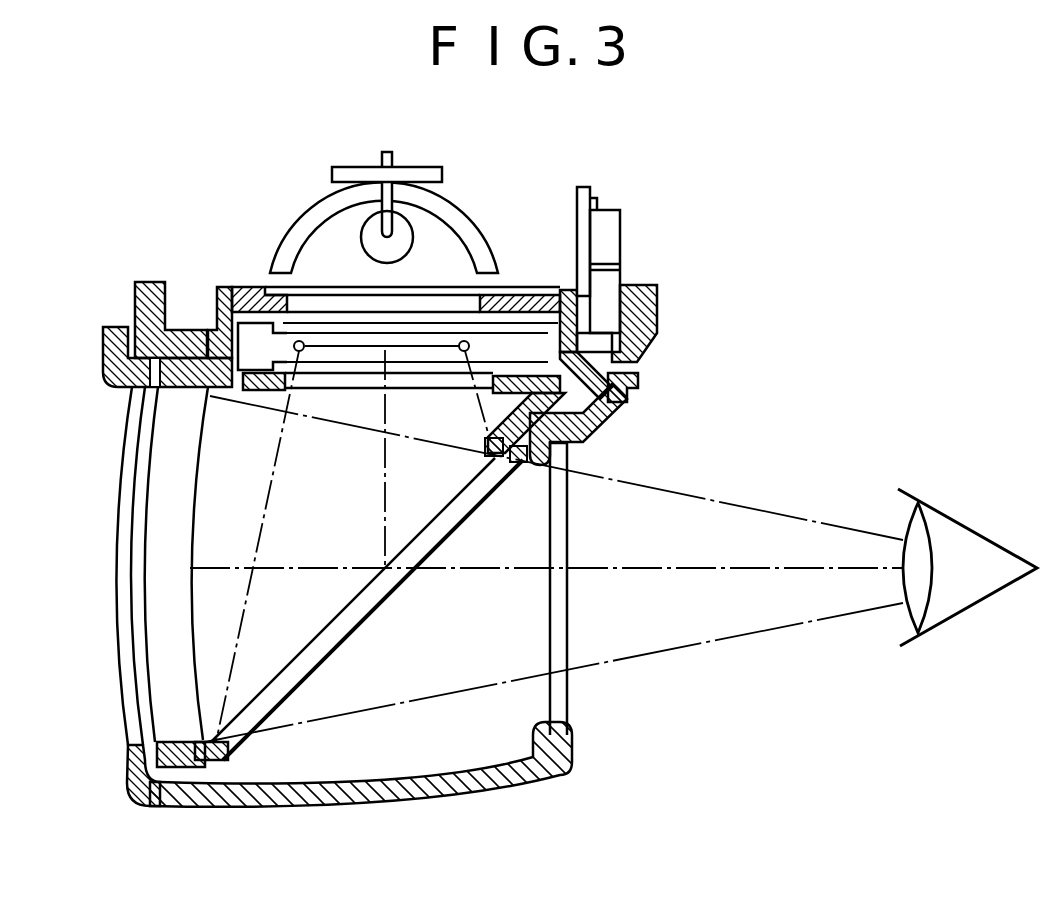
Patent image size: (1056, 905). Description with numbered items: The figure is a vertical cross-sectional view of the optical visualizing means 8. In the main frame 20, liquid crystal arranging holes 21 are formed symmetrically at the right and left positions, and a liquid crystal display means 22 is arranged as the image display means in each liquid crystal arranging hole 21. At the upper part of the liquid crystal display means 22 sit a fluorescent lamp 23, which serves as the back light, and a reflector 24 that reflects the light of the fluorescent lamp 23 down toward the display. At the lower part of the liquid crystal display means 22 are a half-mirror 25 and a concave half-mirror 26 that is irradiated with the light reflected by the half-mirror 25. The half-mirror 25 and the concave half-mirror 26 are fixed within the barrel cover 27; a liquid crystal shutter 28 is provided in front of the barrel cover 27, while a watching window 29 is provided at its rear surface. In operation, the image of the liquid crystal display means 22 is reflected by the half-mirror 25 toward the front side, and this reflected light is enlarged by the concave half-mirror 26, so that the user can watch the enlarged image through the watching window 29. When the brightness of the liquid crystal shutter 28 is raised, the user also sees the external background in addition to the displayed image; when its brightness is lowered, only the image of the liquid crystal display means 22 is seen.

The optical visualizing means 8 is at (110, 214).
The main frame 20 is at (146, 323).
The liquid crystal arranging hole 21 is at (209, 337).
The liquid crystal display means 22 is at (258, 337).
The fluorescent lamp 23 is at (405, 243).
The reflector 24 is at (307, 218).
The half-mirror 25 is at (332, 633).
The concave half-mirror 26 is at (155, 606).
The barrel cover 27 is at (483, 777).
The liquid crystal shutter 28 is at (121, 478).
The watching window 29 is at (560, 691).